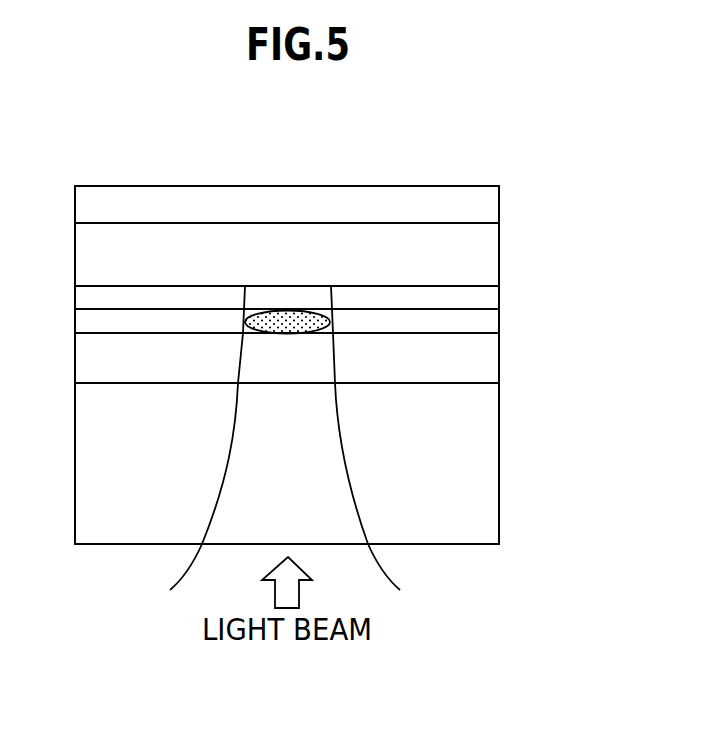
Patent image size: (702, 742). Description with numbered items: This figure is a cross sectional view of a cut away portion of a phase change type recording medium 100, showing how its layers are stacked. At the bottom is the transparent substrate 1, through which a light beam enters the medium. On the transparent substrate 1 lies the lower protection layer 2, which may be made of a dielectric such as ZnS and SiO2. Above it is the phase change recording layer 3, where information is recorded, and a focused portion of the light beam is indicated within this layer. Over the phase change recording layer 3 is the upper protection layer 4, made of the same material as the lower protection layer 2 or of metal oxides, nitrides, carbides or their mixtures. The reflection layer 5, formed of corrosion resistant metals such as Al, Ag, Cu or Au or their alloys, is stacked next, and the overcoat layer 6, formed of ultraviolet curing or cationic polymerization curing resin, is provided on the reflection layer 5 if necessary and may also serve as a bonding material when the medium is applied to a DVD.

The phase change type recording medium 100 is at (510, 148).
The transparent substrate 1 is at (500, 465).
The lower protection layer 2 is at (500, 362).
The phase change recording layer 3 is at (500, 323).
The upper protection layer 4 is at (500, 298).
The reflection layer 5 is at (500, 254).
The overcoat layer 6 is at (500, 206).